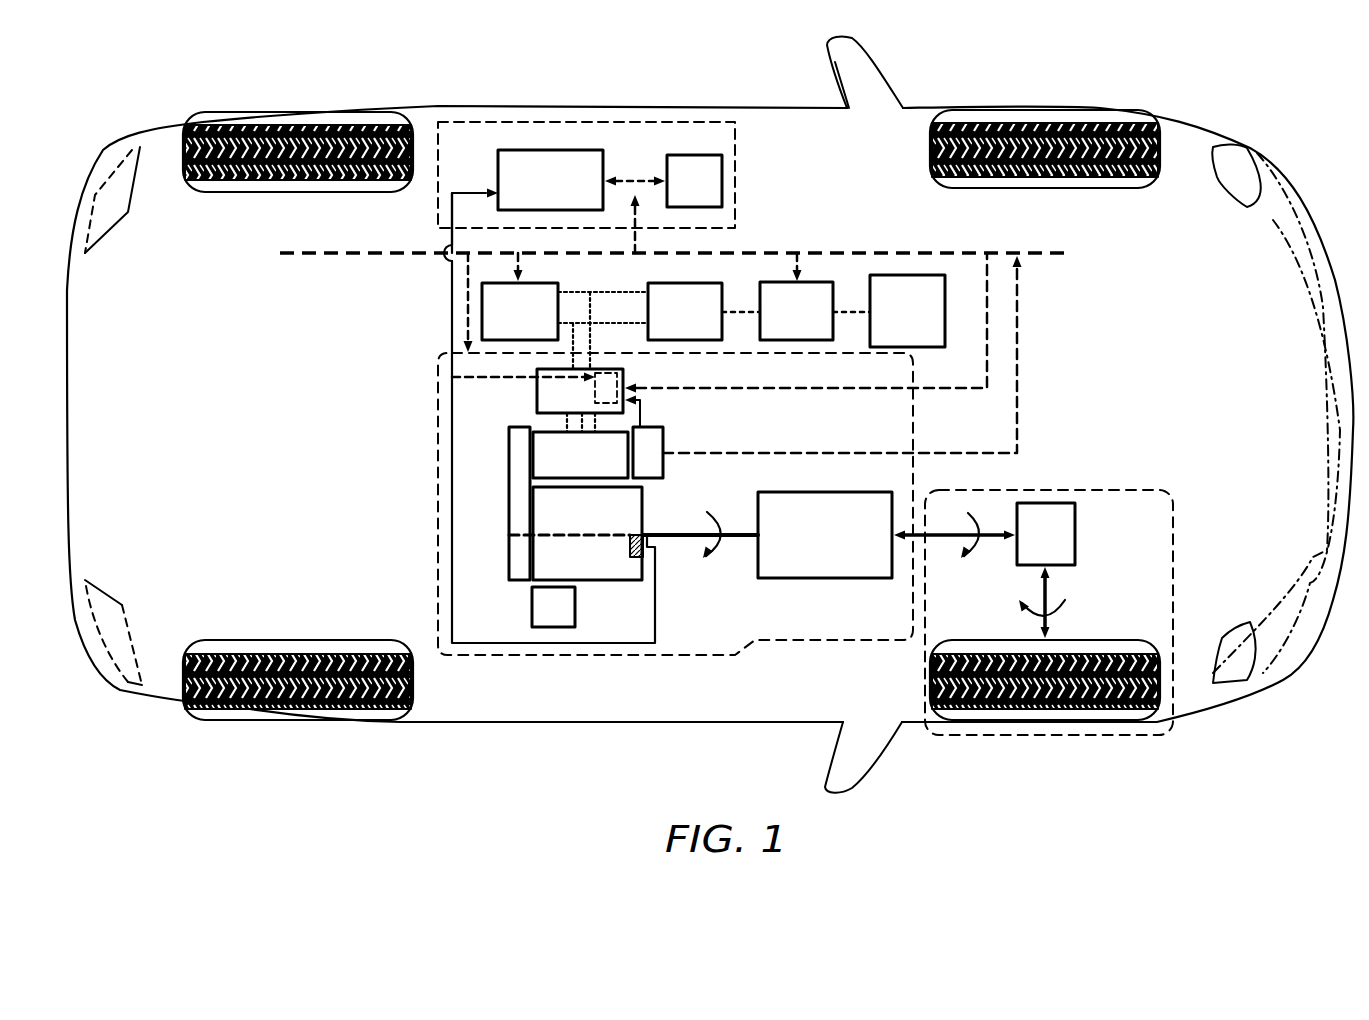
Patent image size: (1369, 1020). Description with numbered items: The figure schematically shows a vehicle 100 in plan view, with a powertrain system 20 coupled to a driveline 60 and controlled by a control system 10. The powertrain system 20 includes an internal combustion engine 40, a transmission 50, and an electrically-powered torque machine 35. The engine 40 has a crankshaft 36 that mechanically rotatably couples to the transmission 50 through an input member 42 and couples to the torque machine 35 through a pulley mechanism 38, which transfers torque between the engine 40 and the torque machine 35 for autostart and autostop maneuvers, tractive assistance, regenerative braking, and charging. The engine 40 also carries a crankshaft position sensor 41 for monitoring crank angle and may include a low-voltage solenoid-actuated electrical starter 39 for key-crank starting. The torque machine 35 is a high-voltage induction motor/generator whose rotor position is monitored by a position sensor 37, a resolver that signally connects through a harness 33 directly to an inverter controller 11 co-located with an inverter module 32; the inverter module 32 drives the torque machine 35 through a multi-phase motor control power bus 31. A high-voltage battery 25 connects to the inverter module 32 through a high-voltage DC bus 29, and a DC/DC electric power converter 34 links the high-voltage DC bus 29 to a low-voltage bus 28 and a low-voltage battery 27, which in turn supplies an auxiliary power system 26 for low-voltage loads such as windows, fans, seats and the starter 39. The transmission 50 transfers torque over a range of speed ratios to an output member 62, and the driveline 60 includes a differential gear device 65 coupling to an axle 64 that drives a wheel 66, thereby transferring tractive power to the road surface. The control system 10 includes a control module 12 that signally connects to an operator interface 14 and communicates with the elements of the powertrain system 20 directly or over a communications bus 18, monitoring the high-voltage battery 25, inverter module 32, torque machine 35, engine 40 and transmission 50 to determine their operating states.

The vehicle 100 is at (1143, 224).
The control system 10 is at (490, 152).
The control module 12 is at (564, 194).
The operator interface 14 is at (708, 194).
The communications bus 18 is at (362, 247).
The powertrain system 20 is at (922, 406).
The high-voltage battery 25 is at (534, 324).
The auxiliary power system 26 is at (921, 324).
The low-voltage battery 27 is at (810, 324).
The low-voltage bus 28 is at (735, 306).
The high-voltage DC bus 29 is at (620, 323).
The inverter controller 11 is at (620, 378).
The multi-phase motor control power bus 31 is at (565, 420).
The inverter module 32 is at (575, 409).
The harness 33 is at (642, 418).
The DC/DC electric power converter 34 is at (699, 324).
The electrically-powered torque machine 35 is at (594, 469).
The crankshaft 36 is at (600, 533).
The position sensor 37 is at (663, 440).
The pulley mechanism 38 is at (509, 507).
The low-voltage solenoid-actuated electrical starter 39 is at (532, 612).
The internal combustion engine 40 is at (601, 566).
The crankshaft position sensor 41 is at (640, 556).
The input member 42 is at (742, 527).
The transmission 50 is at (839, 549).
The driveline 60 is at (1077, 474).
The output member 62 is at (945, 533).
The axle 64 is at (1056, 594).
The differential gear device 65 is at (1060, 550).
The wheel 66 is at (1014, 634).